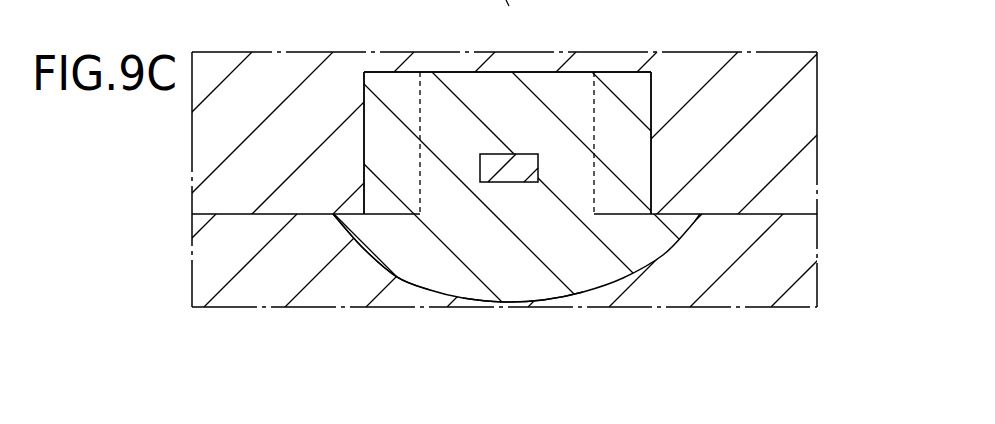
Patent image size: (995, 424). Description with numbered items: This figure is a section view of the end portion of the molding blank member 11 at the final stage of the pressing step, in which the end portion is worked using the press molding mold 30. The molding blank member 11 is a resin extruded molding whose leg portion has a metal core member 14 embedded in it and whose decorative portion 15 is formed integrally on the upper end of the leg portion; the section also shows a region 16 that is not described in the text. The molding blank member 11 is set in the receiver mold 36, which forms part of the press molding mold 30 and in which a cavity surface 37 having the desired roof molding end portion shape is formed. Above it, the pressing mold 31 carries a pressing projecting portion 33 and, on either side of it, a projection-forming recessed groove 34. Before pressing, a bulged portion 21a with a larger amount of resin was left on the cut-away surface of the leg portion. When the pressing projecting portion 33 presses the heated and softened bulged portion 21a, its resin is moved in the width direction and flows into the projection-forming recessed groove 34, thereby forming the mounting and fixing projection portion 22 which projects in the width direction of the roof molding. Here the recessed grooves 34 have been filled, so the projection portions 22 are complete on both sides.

The molding blank member 11 is at (524, 257).
The metal core member 14 is at (530, 165).
The decorative portion 15 is at (438, 273).
The lens edge portion 16 is at (383, 271).
The bulged portion 21a is at (529, 44).
The mounting and fixing projection portion 22 is at (398, 86).
The press molding mold 30 is at (497, 179).
The pressing mold 31 is at (807, 192).
The pressing projecting portion 33 is at (503, 77).
The projection-forming recessed groove 34 is at (365, 153).
The receiver mold 36 is at (807, 243).
The cavity surface 37 is at (569, 292).